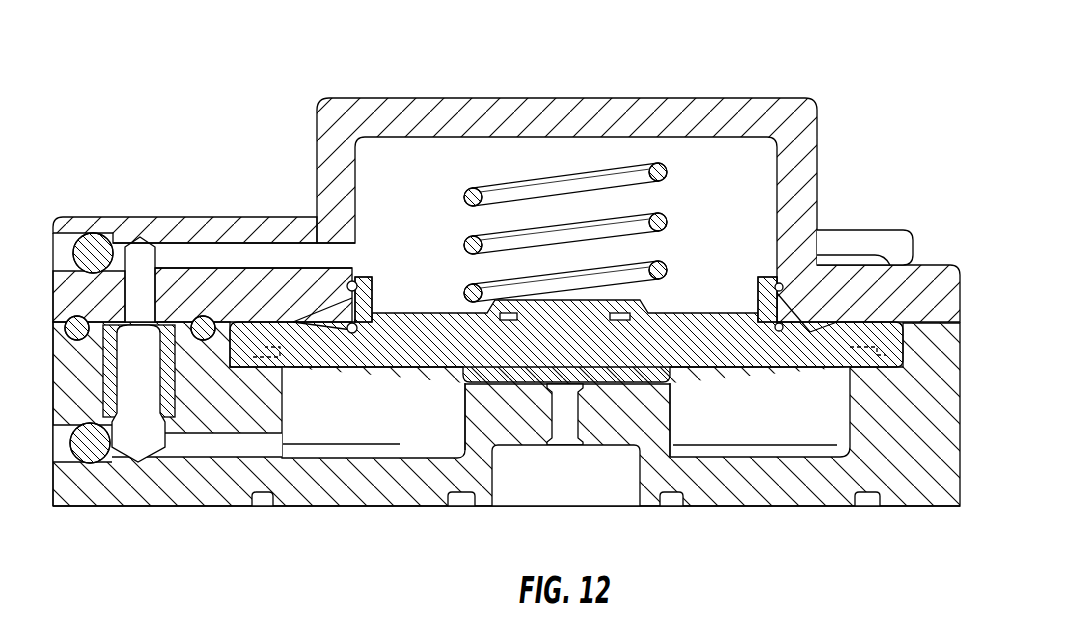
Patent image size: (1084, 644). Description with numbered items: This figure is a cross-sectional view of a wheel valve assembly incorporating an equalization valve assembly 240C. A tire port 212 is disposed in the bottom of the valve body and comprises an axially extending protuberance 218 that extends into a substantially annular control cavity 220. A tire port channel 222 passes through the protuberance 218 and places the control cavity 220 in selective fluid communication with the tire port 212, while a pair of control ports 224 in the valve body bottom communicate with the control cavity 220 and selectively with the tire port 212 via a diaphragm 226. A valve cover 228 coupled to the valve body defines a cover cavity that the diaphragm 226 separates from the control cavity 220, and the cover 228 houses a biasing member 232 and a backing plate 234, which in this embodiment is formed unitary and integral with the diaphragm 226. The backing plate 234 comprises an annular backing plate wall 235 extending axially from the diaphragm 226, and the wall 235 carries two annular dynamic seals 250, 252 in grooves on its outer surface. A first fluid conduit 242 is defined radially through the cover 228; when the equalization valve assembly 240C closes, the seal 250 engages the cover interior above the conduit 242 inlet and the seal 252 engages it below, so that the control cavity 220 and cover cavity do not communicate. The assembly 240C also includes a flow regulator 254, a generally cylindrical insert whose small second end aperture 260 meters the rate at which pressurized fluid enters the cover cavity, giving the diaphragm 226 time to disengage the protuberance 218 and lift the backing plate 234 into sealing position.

The tire port 212 is at (523, 487).
The protuberance 218 is at (473, 402).
The control cavity 220 is at (313, 430).
The tire port channel 222 is at (563, 418).
The control ports 224 is at (205, 445).
The diaphragm 226 is at (810, 332).
The valve cover 228 is at (333, 107).
The biasing member 232 is at (632, 174).
The backing plate 234 is at (378, 276).
The backing plate wall 235 is at (775, 293).
The equalization valve assembly 240C is at (125, 178).
The first fluid conduit 242 is at (167, 253).
The dynamic seal 250 is at (348, 286).
The dynamic seal 252 is at (293, 322).
The flow regulator 254 is at (77, 240).
The second end aperture 260 is at (137, 322).